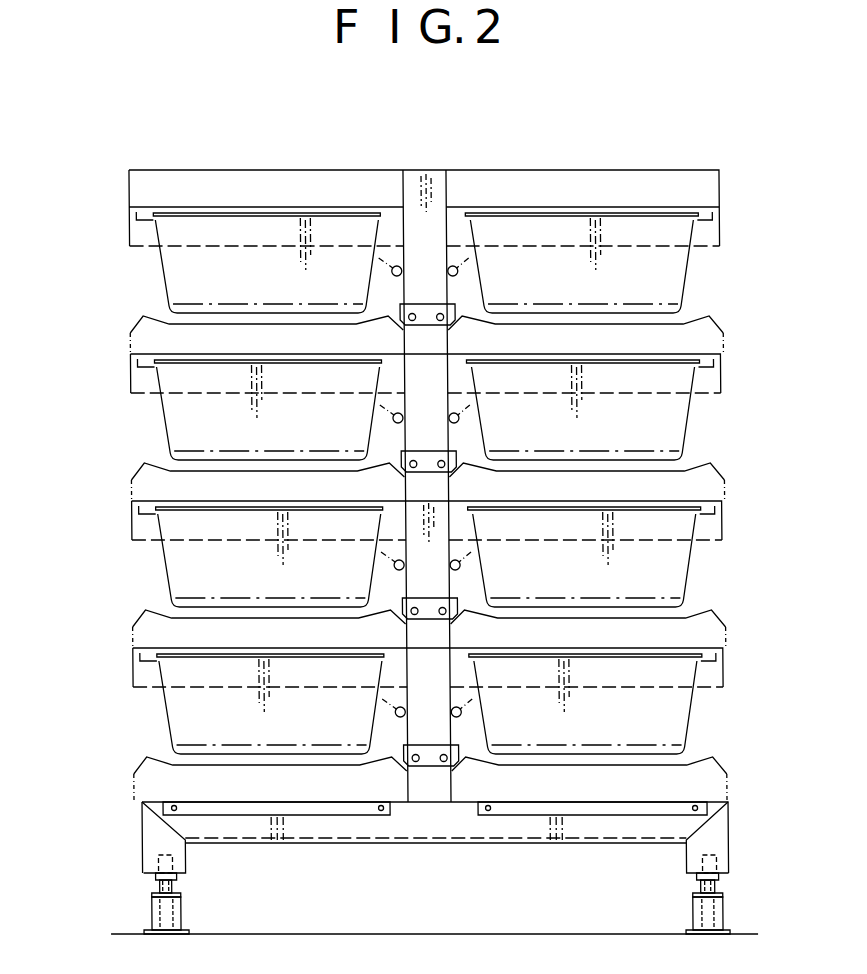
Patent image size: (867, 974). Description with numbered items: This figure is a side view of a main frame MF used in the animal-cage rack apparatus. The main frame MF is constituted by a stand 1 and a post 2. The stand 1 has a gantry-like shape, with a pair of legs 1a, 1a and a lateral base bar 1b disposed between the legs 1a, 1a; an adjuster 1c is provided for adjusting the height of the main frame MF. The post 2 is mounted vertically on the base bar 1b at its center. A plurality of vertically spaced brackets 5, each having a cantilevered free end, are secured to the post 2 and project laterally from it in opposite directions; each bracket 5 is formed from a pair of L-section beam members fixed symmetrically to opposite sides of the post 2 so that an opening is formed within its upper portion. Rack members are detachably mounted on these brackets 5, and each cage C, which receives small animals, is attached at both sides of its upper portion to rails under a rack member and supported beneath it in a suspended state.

The main frame MF is at (418, 459).
The post 2 is at (434, 188).
The bracket 5 is at (140, 240).
The cage C is at (170, 288).
The stand 1 is at (434, 868).
The leg 1a is at (170, 853).
The lateral base bar 1b is at (438, 825).
The adjuster 1c is at (175, 908).